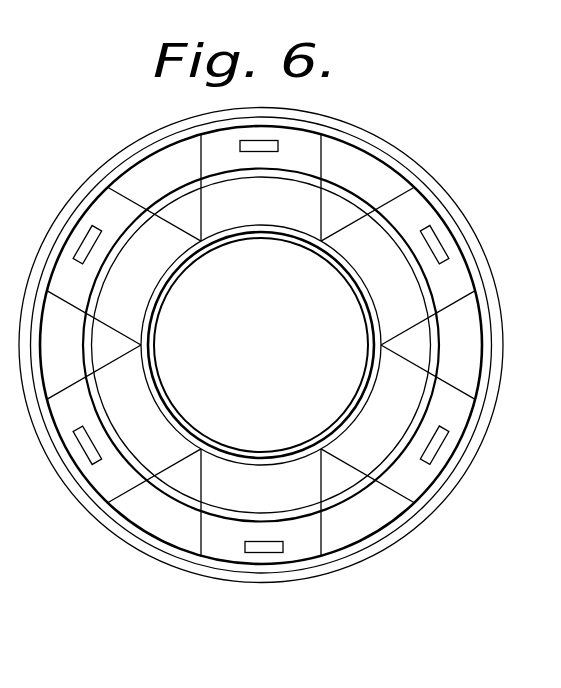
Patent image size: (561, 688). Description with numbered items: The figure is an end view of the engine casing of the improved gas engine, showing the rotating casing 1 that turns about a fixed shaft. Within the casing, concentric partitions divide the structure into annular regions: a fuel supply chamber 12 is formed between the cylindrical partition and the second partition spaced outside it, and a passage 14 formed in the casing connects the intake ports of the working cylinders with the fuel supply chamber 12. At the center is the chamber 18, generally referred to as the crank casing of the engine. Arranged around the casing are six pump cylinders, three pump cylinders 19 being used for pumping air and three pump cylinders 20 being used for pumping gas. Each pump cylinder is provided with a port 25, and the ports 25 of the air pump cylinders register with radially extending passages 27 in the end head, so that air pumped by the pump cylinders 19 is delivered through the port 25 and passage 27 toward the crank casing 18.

The rotating casing 1 is at (383, 153).
The fuel supply chamber 12 is at (348, 224).
The passage 14 is at (368, 186).
The chamber 18 is at (309, 294).
The pump cylinders 19 is at (261, 372).
The pump cylinders 20 is at (261, 318).
The port 25 is at (264, 146).
The passages 27 is at (80, 243).